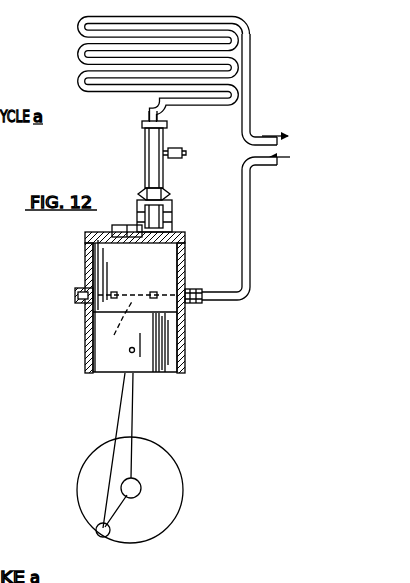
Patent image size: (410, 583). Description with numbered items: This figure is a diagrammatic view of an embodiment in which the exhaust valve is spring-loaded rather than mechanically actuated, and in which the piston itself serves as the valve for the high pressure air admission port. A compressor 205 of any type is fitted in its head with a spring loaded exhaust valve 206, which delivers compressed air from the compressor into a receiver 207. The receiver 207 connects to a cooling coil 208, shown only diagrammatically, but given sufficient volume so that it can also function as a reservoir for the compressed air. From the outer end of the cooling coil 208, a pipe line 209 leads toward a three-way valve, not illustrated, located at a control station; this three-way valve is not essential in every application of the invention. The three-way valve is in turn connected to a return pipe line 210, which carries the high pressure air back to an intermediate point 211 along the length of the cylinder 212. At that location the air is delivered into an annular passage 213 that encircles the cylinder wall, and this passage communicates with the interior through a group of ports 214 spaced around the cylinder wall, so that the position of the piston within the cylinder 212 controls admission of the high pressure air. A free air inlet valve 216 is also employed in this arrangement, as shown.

The compressor 205 is at (84, 263).
The spring loaded exhaust valve 206 is at (155, 238).
The receiver 207 is at (146, 153).
The cooling coil 208 is at (82, 32).
The pipe line 209 is at (254, 138).
The return pipe line 210 is at (246, 231).
The intermediate point 211 is at (188, 290).
The cylinder 212 is at (184, 325).
The annular passage 213 is at (121, 343).
The ports 214 is at (148, 292).
The free air inlet valve 216 is at (124, 231).